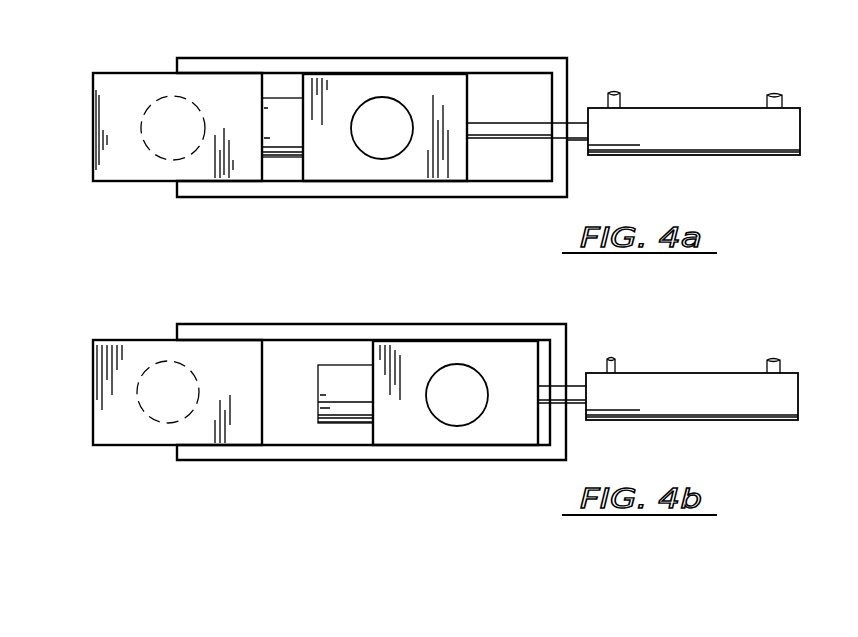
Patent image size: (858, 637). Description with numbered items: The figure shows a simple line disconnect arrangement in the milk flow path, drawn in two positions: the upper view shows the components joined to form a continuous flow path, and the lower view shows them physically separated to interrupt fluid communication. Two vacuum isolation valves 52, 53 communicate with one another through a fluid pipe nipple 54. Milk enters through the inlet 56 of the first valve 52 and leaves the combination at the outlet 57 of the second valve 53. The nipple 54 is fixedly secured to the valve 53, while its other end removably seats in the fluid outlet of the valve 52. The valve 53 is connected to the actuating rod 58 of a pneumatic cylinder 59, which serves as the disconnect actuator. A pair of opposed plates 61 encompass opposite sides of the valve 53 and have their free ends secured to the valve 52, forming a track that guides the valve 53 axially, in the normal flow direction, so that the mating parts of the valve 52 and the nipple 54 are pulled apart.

In FIG. 4A, the vacuum isolation valve 52 is at (123, 182).
In FIG. 4B, the vacuum isolation valve 52 is at (140, 342).
In FIG. 4A, the vacuum isolation valve 53 is at (350, 82).
In FIG. 4B, the vacuum isolation valve 53 is at (508, 438).
In FIG. 4A, the fluid pipe nipple 54 is at (283, 160).
In FIG. 4B, the fluid pipe nipple 54 is at (327, 387).
In FIG. 4A, the inlet 56 is at (158, 102).
In FIG. 4B, the inlet 56 is at (163, 422).
In FIG. 4A, the outlet 57 is at (405, 108).
In FIG. 4B, the outlet 57 is at (450, 425).
In FIG. 4A, the actuating rod 58 is at (538, 123).
In FIG. 4B, the actuating rod 58 is at (575, 385).
In FIG. 4A, the pneumatic cylinder 59 is at (662, 157).
In FIG. 4B, the pneumatic cylinder 59 is at (683, 422).
In FIG. 4A, the opposed plates 61 is at (247, 63).
In FIG. 4B, the opposed plates 61 is at (432, 328).